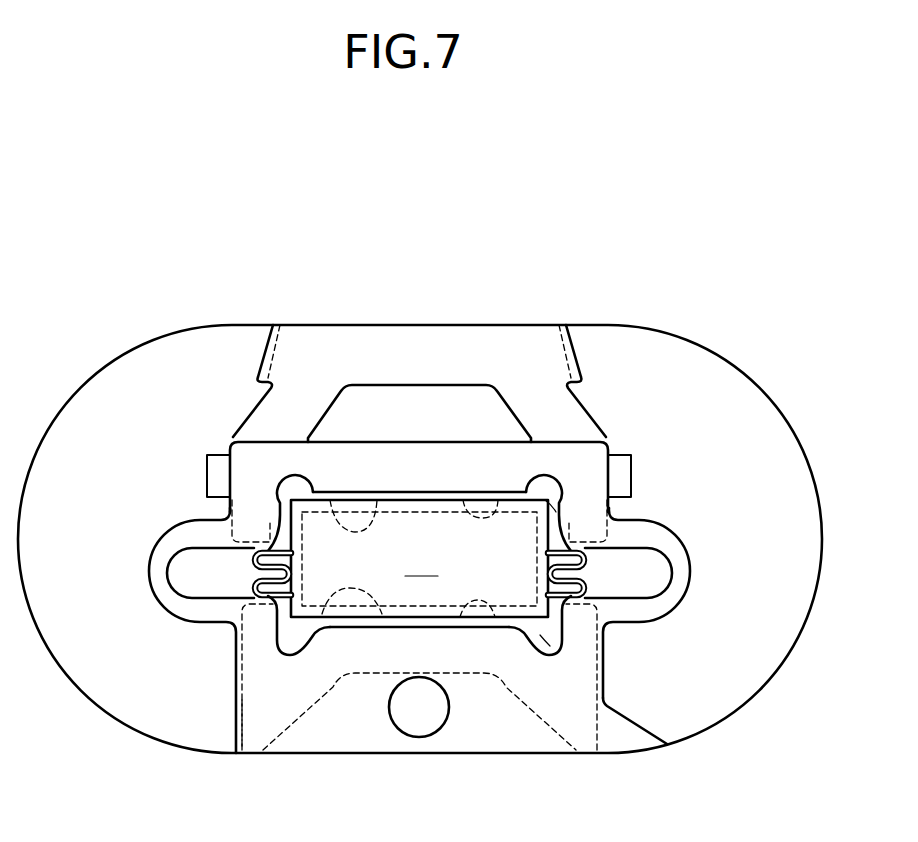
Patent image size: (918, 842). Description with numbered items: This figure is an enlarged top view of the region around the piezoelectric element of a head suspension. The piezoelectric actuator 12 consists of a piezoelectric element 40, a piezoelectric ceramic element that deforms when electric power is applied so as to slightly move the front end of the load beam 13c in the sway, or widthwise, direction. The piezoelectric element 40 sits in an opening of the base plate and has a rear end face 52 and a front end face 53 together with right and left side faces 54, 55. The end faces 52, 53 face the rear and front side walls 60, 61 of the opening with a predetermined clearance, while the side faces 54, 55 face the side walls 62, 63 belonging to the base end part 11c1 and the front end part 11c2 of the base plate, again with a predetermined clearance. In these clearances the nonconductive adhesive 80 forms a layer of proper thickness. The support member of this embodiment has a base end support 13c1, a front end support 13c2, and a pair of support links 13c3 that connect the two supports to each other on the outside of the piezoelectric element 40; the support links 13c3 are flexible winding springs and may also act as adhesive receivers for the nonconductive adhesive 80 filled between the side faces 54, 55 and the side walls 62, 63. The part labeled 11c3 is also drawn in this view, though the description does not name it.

The load beam 13c is at (446, 348).
The base end support 13c1 is at (283, 632).
The front end support 13c2 is at (330, 500).
The support links 13c3 is at (252, 580).
The piezoelectric actuator 12 is at (448, 484).
The base end part of base plate 11c1 is at (602, 688).
The front end part of base plate 11c2 is at (533, 463).
The housing channel portion 11c3 is at (165, 560).
The piezoelectric element 40 is at (419, 558).
The rear end face 52 is at (352, 614).
The front end face 53 is at (344, 497).
The right side face 54 is at (558, 606).
The left side face 55 is at (283, 605).
The rear side wall 60 is at (468, 620).
The front side wall 61 is at (490, 508).
The side wall 62 is at (561, 506).
The side wall 63 is at (277, 504).
The nonconductive adhesive 80 is at (560, 492).